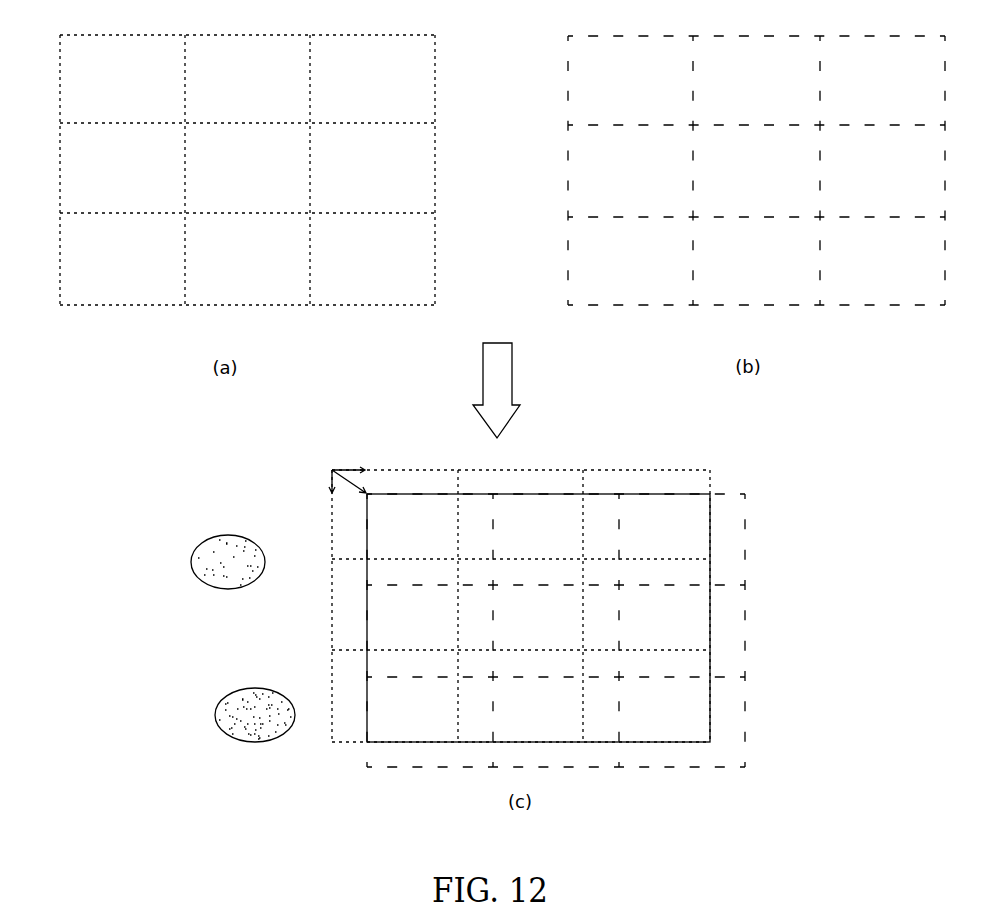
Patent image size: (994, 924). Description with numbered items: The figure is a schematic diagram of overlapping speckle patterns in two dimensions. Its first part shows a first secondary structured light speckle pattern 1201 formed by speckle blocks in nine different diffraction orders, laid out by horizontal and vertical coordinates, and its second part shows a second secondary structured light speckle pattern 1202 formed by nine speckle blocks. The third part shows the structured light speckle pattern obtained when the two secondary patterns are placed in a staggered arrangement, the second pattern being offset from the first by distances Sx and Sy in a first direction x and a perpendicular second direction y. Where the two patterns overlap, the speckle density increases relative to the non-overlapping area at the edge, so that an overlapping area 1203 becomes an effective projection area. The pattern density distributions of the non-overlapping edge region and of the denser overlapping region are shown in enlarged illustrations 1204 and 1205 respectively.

The first secondary structured light speckle pattern 1201 is at (125, 38).
The second secondary structured light speckle pattern 1202 is at (635, 38).
The overlapping area 1203 is at (653, 495).
The enlarged illustration 1204 is at (347, 585).
The enlarged illustration 1205 is at (410, 672).